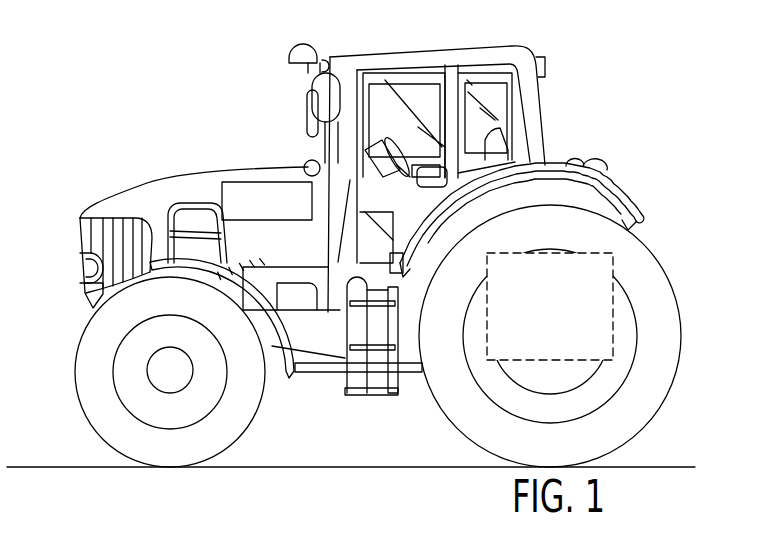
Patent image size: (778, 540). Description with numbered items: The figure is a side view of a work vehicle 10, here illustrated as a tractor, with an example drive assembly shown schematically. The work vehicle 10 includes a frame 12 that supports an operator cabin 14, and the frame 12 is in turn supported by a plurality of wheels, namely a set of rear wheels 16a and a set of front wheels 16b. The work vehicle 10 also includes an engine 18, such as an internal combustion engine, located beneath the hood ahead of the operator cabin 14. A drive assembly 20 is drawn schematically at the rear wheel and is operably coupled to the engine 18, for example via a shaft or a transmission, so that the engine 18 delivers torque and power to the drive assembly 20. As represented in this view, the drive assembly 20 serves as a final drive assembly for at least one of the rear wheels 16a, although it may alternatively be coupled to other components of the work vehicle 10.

The work vehicle 10 is at (225, 117).
The frame 12 is at (327, 383).
The operator cabin 14 is at (418, 105).
The rear wheels 16a is at (648, 305).
The front wheels 16b is at (98, 382).
The engine 18 is at (245, 182).
The drive assembly 20 is at (612, 263).